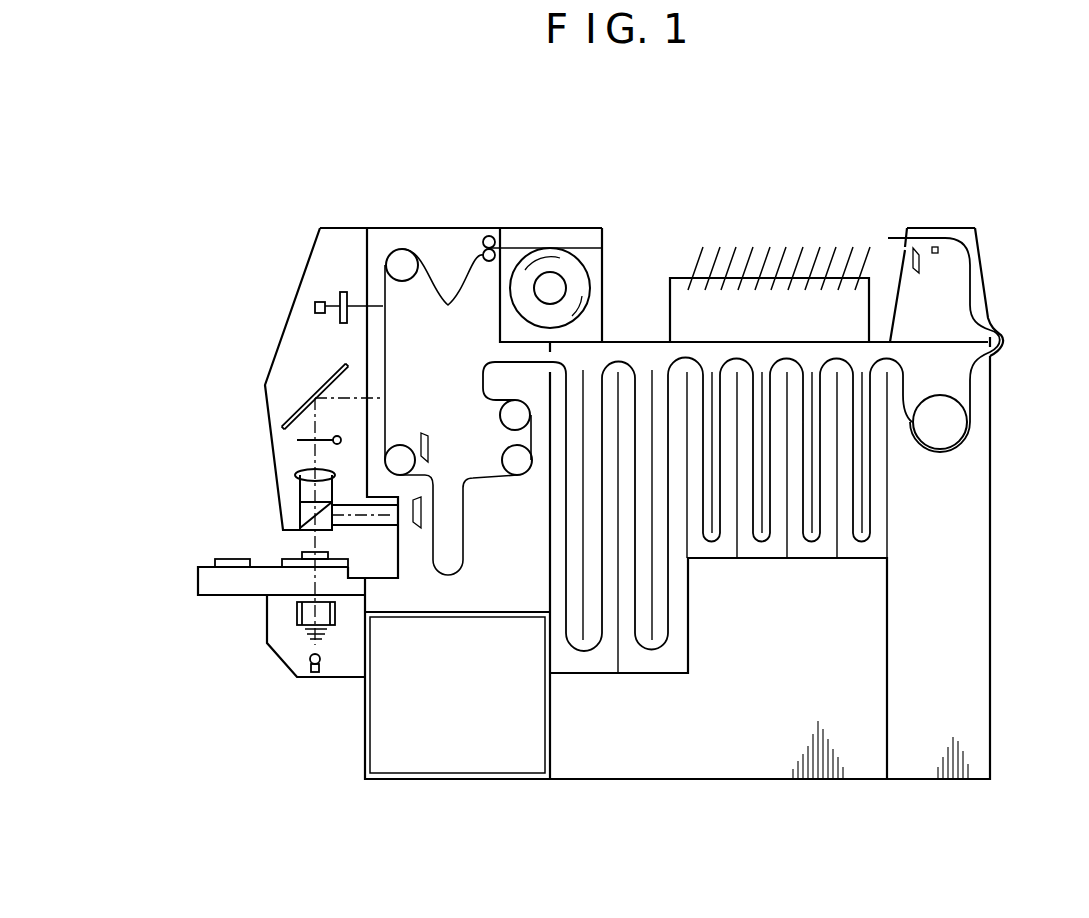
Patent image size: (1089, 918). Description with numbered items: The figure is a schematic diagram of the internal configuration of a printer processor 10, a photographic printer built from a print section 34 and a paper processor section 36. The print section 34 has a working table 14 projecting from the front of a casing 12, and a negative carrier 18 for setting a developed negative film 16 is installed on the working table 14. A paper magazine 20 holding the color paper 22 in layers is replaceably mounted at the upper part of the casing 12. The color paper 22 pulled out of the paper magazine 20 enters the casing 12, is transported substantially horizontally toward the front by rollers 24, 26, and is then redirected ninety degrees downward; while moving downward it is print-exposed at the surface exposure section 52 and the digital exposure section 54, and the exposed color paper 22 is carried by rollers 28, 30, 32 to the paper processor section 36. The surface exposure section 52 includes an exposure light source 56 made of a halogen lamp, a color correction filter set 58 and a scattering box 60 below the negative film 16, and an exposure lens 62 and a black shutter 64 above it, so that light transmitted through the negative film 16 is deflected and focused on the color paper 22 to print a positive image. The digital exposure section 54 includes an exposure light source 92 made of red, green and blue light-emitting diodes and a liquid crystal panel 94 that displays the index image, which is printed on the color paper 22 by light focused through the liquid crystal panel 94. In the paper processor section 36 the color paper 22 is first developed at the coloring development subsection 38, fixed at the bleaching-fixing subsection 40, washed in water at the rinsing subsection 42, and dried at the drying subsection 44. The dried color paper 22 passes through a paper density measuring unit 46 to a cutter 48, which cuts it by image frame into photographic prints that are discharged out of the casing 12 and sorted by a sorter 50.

The printer processor 10 is at (658, 185).
The casing 12 is at (440, 228).
The working table 14 is at (205, 583).
The negative film 16 is at (310, 552).
The negative carrier 18 is at (290, 558).
The paper magazine 20 is at (604, 250).
The color paper 22 is at (565, 262).
The roller 24 is at (490, 236).
The roller 26 is at (400, 260).
The roller 28 is at (400, 455).
The roller 30 is at (517, 460).
The roller 32 is at (512, 412).
The print section 34 is at (276, 712).
The paper processor section 36 is at (731, 785).
The coloring development subsection 38 is at (597, 665).
The bleaching-fixing subsection 40 is at (660, 665).
The rinsing subsection 42 is at (885, 566).
The drying subsection 44 is at (976, 656).
The paper density measuring unit 46 is at (1015, 326).
The cutter 48 is at (937, 222).
The sorter 50 is at (686, 277).
The surface exposure section 52 is at (298, 376).
The digital exposure section 54 is at (322, 289).
The exposure light source 56 is at (323, 658).
The color correction filter set 58 is at (337, 640).
The scattering box 60 is at (338, 617).
The exposure lens 62 is at (295, 475).
The black shutter 64 is at (297, 440).
The exposure light source 92 is at (318, 313).
The liquid crystal panel 94 is at (343, 292).